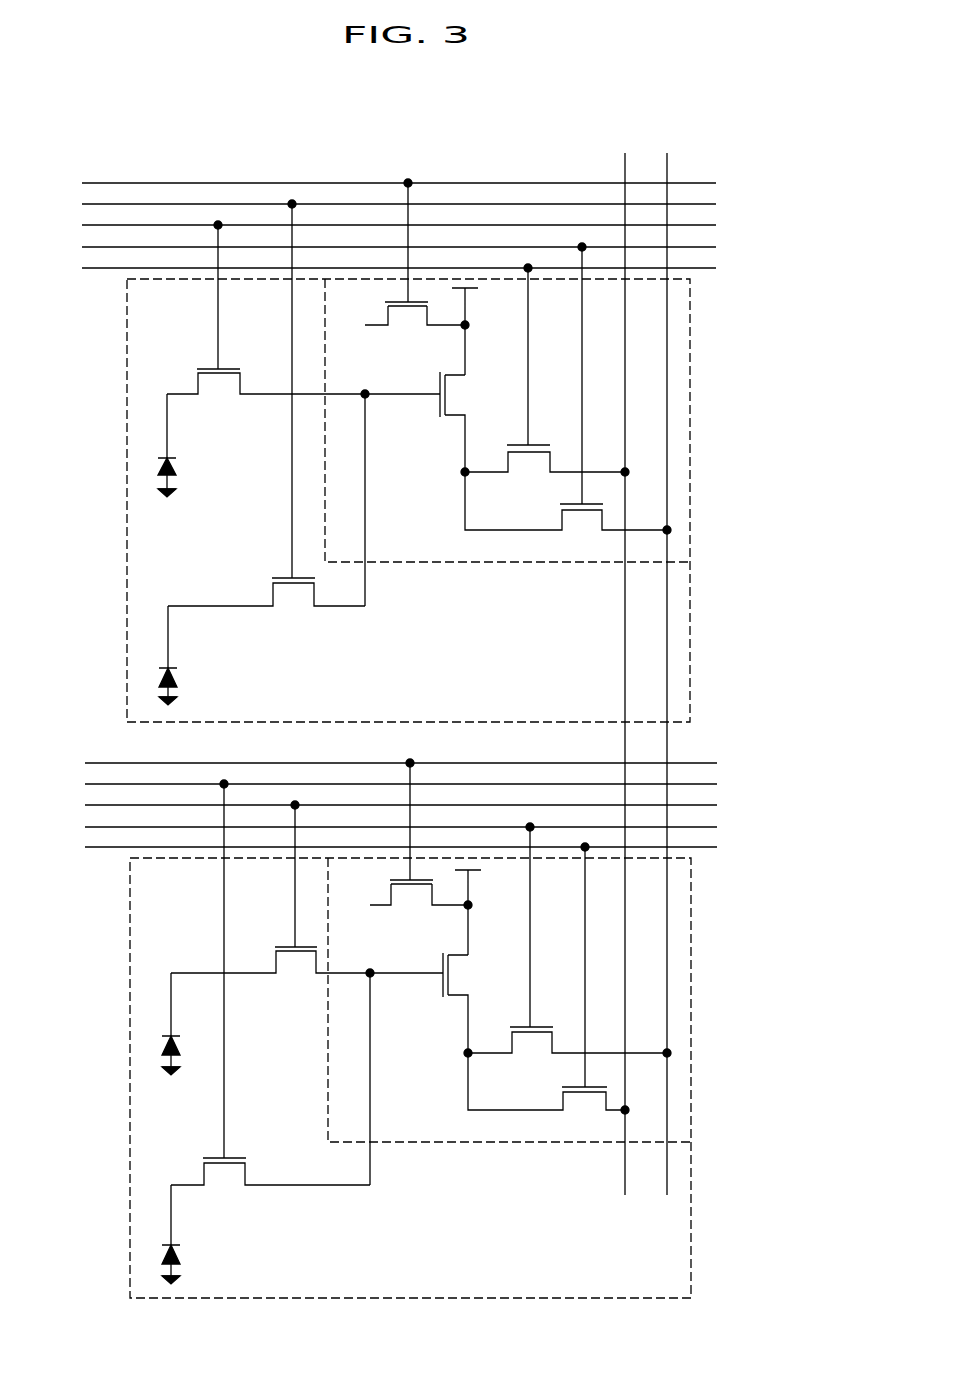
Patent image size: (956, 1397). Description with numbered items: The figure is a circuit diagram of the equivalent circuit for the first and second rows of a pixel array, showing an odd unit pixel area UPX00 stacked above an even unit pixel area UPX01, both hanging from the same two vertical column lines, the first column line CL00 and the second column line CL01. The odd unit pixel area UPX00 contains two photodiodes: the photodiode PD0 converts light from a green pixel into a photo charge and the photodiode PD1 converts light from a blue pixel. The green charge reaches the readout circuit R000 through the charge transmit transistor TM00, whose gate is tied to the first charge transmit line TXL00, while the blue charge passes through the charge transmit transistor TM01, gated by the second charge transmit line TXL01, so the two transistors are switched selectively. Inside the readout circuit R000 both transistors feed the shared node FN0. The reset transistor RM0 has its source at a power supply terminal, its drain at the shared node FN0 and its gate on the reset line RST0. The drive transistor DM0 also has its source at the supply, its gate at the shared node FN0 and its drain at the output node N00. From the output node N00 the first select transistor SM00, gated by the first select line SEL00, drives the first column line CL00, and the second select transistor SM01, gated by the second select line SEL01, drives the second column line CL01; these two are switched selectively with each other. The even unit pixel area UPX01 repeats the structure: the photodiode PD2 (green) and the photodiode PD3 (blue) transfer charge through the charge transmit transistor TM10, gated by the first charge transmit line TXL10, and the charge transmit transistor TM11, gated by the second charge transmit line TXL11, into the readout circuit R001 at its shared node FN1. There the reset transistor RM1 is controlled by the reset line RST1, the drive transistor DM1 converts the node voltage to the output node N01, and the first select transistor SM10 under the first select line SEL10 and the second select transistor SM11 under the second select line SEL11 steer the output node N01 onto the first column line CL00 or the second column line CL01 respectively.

The first column line CL00 is at (624, 154).
The second column line CL01 is at (668, 154).
The reset line RST0 is at (425, 182).
The second charge transmit line TXL01 is at (430, 203).
The first charge transmit line TXL00 is at (431, 224).
The second select line SEL01 is at (430, 246).
The first select line SEL00 is at (431, 268).
The odd unit pixel area UPX00 is at (126, 484).
The readout circuit R000 is at (493, 563).
The charge transmit transistor TM00 is at (266, 320).
The photodiode PD0 is at (156, 432).
The charge transmit transistor TM01 is at (266, 418).
The photodiode PD1 is at (158, 641).
The shared node FN0 is at (367, 397).
The reset transistor RM0 is at (410, 279).
The drive transistor DM0 is at (469, 422).
The output node N00 is at (463, 475).
The first select transistor SM00 is at (547, 384).
The second select transistor SM01 is at (568, 402).
The reset line RST1 is at (426, 762).
The second charge transmit line TXL11 is at (431, 784).
The first charge transmit line TXL10 is at (432, 805).
The second select line SEL11 is at (431, 826).
The first select line SEL10 is at (432, 847).
The even unit pixel area UPX01 is at (130, 1059).
The readout circuit R001 is at (497, 1143).
The charge transmit transistor TM10 is at (270, 902).
The photodiode PD2 is at (161, 1011).
The charge transmit transistor TM11 is at (270, 997).
The photodiode PD3 is at (163, 1220).
The shared node FN1 is at (372, 976).
The reset transistor RM1 is at (414, 859).
The drive transistor DM1 is at (472, 1003).
The output node N01 is at (466, 1056).
The second select transistor SM11 is at (569, 952).
The first select transistor SM10 is at (548, 992).